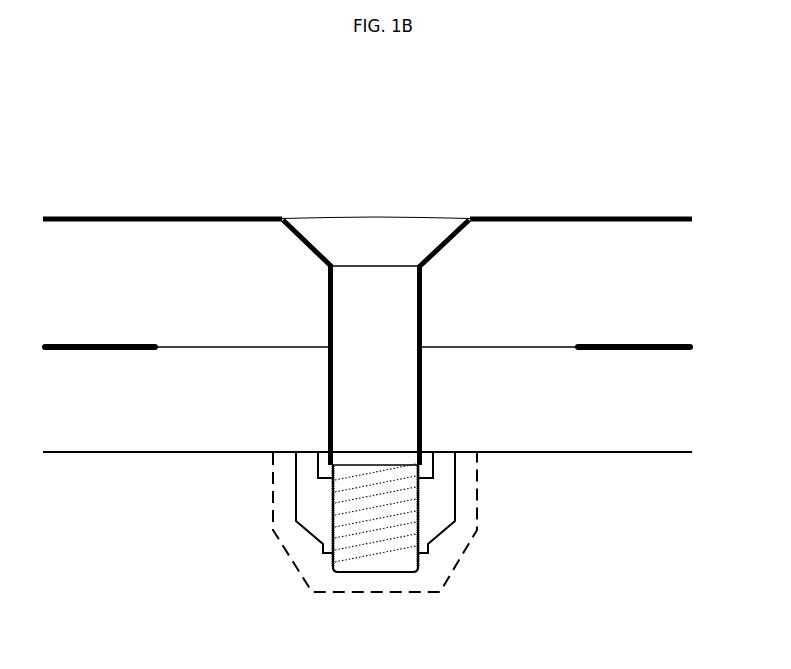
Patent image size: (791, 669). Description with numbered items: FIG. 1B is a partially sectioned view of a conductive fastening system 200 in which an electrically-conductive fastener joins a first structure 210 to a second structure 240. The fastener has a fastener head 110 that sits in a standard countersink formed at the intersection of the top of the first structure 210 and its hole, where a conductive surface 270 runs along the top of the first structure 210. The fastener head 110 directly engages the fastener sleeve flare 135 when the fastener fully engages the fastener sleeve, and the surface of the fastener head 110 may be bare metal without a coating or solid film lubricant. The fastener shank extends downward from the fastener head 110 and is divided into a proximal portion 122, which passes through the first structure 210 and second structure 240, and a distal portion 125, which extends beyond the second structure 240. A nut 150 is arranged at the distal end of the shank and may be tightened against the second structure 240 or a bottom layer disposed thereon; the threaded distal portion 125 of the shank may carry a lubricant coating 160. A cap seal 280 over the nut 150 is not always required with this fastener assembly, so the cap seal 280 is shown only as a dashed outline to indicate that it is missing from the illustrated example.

The fastener 200 is at (364, 117).
The fastener head 110 is at (396, 203).
The fastener sleeve flare 135 is at (339, 214).
The proximal portion of the fastener shank 122 is at (429, 365).
The distal portion of the fastener shank 125 is at (418, 547).
The nut 150 is at (309, 531).
The lubricant coating 160 is at (340, 609).
The conductive surface 270 is at (362, 190).
The first structure 210 is at (569, 281).
The second structure 240 is at (367, 415).
The cap seal 280 is at (419, 523).